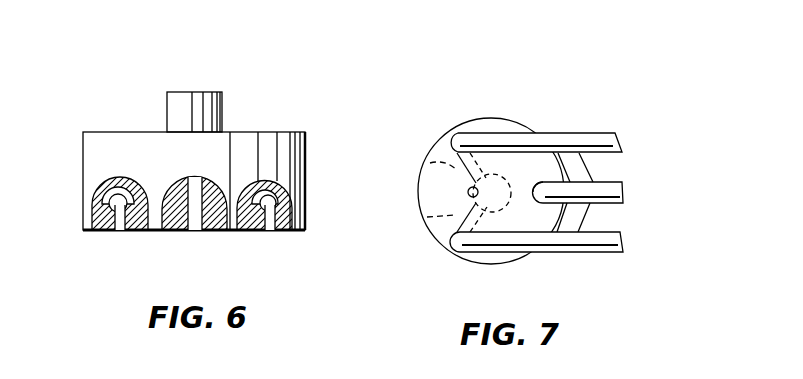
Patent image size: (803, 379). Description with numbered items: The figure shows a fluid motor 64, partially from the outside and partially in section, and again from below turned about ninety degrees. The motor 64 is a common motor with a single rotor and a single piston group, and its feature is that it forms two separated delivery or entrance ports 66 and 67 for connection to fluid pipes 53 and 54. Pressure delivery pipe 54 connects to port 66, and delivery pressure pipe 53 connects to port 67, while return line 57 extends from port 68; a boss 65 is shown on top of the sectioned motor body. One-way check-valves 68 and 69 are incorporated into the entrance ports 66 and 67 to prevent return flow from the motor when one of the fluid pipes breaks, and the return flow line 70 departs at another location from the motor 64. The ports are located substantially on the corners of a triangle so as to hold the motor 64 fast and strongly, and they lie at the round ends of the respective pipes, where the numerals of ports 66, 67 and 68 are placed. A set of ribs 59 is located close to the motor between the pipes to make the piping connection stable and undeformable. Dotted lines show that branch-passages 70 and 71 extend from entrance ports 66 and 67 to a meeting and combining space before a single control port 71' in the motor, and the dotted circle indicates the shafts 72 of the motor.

In FIG. 7, the fluid pipe 53 is at (573, 240).
In FIG. 7, the fluid pipe 54 is at (515, 137).
In FIG. 7, the return line 57 is at (612, 193).
In FIG. 7, the set of ribs 59 is at (597, 168).
In FIG. 6, the motor 64 is at (130, 143).
In FIG. 7, the motor 64 is at (427, 188).
In FIG. 6, the mounting boss 65 is at (197, 115).
In FIG. 6, the entrance port 66 is at (120, 226).
In FIG. 7, the entrance port 66 is at (457, 137).
In FIG. 7, the entrance port 67 is at (452, 252).
In FIG. 6, the one-way check-valve 68 is at (268, 212).
In FIG. 7, the one-way check-valve 68 is at (547, 193).
In FIG. 6, the one-way check-valve 69 is at (298, 230).
In FIG. 6, the return flow line 70 is at (197, 223).
In FIG. 7, the return flow line 70 is at (427, 217).
In FIG. 7, the branch-passage 71 is at (419, 156).
In FIG. 7, the control port 71' is at (509, 183).
In FIG. 7, the shafts 72 is at (526, 220).